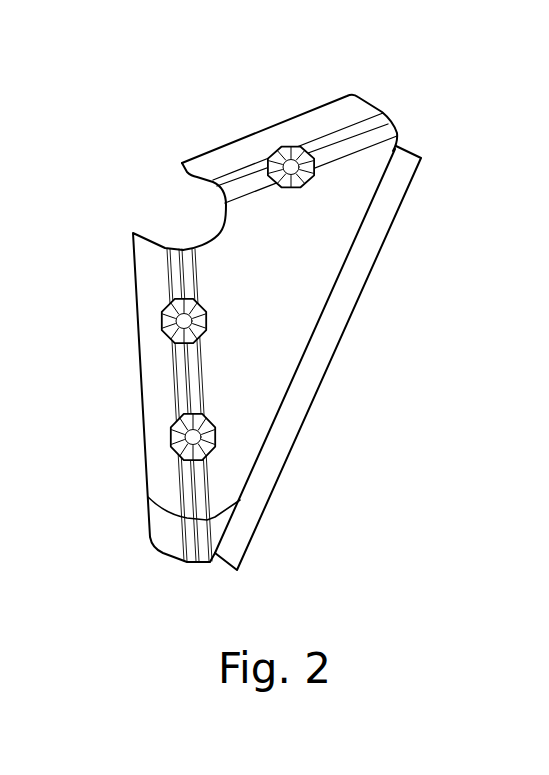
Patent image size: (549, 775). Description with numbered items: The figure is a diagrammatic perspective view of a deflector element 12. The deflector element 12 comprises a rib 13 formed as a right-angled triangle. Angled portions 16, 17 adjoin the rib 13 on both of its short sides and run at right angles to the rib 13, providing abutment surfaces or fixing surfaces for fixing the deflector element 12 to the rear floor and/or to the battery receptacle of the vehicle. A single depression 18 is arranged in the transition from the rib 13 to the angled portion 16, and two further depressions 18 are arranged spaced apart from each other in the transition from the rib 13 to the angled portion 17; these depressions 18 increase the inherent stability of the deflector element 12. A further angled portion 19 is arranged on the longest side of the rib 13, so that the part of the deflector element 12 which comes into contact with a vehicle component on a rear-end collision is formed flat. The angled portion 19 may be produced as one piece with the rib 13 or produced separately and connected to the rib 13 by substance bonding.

The deflector element 12 is at (156, 104).
The rib 13 is at (297, 297).
The angled portion 16 is at (331, 117).
The angled portion 17 is at (153, 388).
The depression 18 is at (277, 147).
The angled portion 19 is at (383, 213).